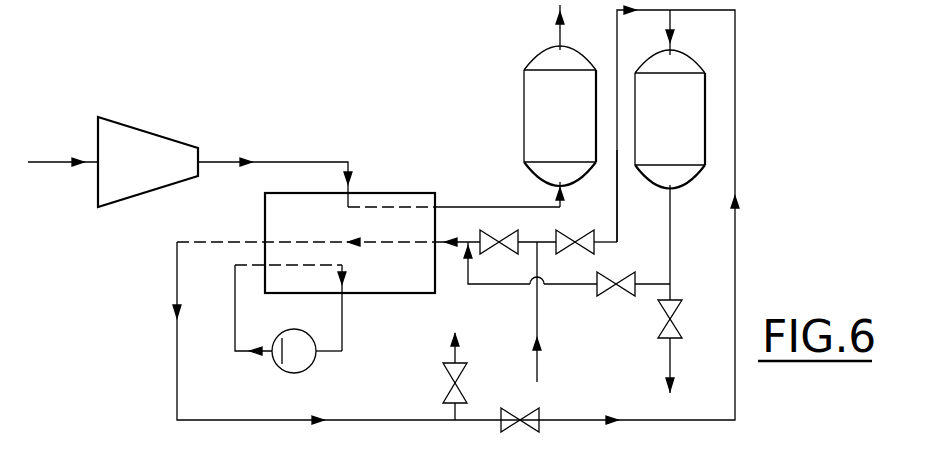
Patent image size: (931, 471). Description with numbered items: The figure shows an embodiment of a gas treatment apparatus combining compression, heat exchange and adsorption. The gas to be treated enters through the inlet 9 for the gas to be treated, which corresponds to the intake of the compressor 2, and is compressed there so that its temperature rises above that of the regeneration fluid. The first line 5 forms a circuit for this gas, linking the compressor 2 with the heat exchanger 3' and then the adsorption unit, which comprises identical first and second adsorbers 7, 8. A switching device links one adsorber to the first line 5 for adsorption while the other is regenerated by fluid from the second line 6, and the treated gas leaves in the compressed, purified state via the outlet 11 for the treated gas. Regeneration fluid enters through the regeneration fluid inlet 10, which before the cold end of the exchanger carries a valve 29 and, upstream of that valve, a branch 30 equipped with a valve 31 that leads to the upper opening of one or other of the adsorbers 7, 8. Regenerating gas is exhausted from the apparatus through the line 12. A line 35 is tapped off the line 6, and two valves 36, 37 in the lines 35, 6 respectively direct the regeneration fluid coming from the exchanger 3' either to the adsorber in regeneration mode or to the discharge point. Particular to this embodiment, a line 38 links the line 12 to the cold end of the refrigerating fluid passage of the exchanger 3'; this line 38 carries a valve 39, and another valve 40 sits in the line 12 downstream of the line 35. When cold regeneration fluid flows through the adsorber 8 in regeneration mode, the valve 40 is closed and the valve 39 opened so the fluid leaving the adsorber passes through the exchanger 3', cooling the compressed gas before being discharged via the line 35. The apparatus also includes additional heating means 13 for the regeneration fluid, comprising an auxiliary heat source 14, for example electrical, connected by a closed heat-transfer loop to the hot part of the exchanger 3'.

The compressor 2 is at (136, 126).
The inlet for the gas to be treated 9 is at (68, 162).
The first line 5 is at (310, 160).
The heat exchanger 3' is at (306, 246).
The second line 6 is at (176, 362).
The additional heating means 13 is at (224, 300).
The auxiliary heat source 14 is at (294, 373).
The first adsorber 7 is at (523, 140).
The outlet for the treated gas 11 is at (558, 44).
The second adsorber 8 is at (675, 190).
The valve 29 is at (496, 248).
The valve 31 is at (584, 250).
The branch 30 is at (600, 250).
The line 38 is at (545, 287).
The regeneration fluid inlet 10 is at (537, 367).
The valve 39 is at (604, 298).
The valve 40 is at (675, 319).
The regenerating gas exhaust line 12 is at (672, 365).
The valve 36 is at (448, 385).
The line 35 is at (458, 362).
The valve 37 is at (532, 408).